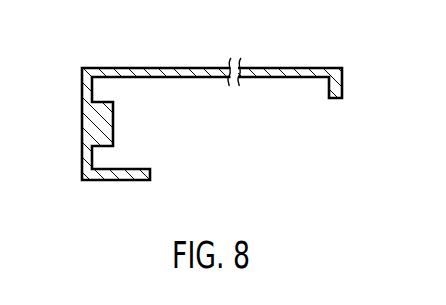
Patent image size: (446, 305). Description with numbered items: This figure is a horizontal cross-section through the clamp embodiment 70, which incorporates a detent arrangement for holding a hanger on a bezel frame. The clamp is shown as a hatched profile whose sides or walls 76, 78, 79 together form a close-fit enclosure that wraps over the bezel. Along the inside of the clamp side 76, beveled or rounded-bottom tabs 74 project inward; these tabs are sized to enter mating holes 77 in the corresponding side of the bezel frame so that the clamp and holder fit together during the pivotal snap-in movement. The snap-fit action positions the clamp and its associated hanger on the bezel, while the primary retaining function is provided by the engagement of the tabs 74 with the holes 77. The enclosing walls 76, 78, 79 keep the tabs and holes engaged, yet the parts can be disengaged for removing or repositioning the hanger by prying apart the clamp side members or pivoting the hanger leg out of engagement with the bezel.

The clamp embodiment 70 is at (76, 65).
The mating holes 77 is at (194, 67).
The beveled or rounded-bottom tabs 74 is at (119, 124).
The clamp side 76 is at (77, 150).
The clamp side or wall 78 is at (135, 183).
The clamp side or wall 79 is at (335, 98).